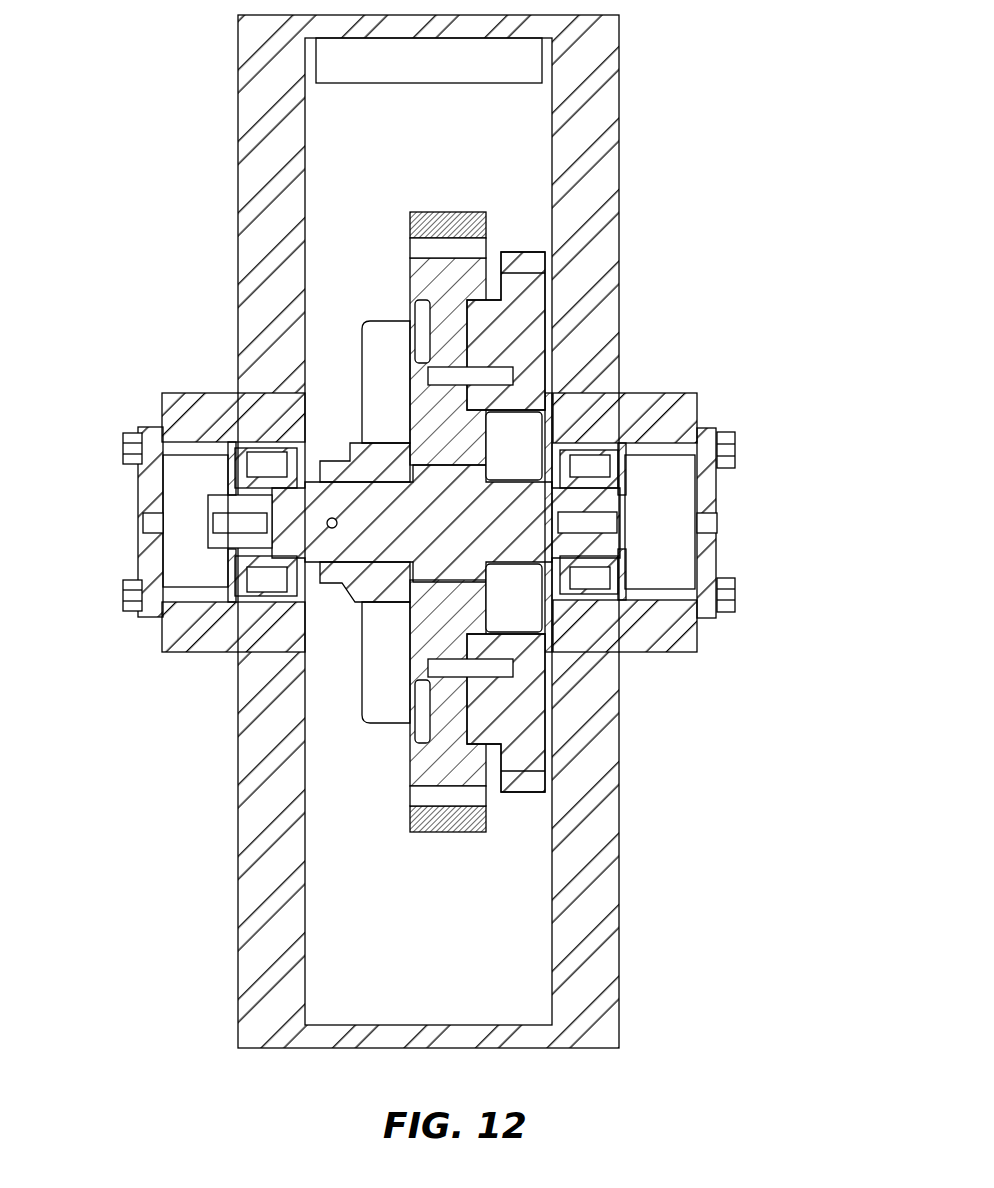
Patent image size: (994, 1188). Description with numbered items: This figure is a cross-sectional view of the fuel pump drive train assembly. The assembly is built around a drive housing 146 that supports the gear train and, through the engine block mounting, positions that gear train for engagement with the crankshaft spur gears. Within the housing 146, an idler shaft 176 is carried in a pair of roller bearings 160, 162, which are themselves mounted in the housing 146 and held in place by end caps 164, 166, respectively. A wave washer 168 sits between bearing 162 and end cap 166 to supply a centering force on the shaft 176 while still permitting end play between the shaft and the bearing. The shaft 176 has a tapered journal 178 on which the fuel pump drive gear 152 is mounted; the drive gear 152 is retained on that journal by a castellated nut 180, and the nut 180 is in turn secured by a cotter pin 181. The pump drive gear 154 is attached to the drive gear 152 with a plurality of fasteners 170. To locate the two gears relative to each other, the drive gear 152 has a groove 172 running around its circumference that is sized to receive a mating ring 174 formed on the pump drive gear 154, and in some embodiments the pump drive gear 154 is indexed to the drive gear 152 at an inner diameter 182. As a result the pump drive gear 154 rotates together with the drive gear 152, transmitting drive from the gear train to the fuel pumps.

The drive housing 146 is at (612, 172).
The fuel pump drive gear 152 is at (440, 212).
The pump drive gear 154 is at (512, 252).
The roller bearing 160 is at (600, 455).
The roller bearing 162 is at (255, 455).
The end cap 164 is at (705, 430).
The end cap 166 is at (148, 447).
The wave washer 168 is at (230, 580).
The fasteners 170 is at (418, 368).
The groove 172 is at (465, 735).
The mating ring 174 is at (468, 727).
The idler shaft 176 is at (607, 498).
The tapered journal 178 is at (425, 575).
The castellated nut 180 is at (343, 588).
The cotter pin 181 is at (332, 517).
The inner diameter 182 is at (482, 634).